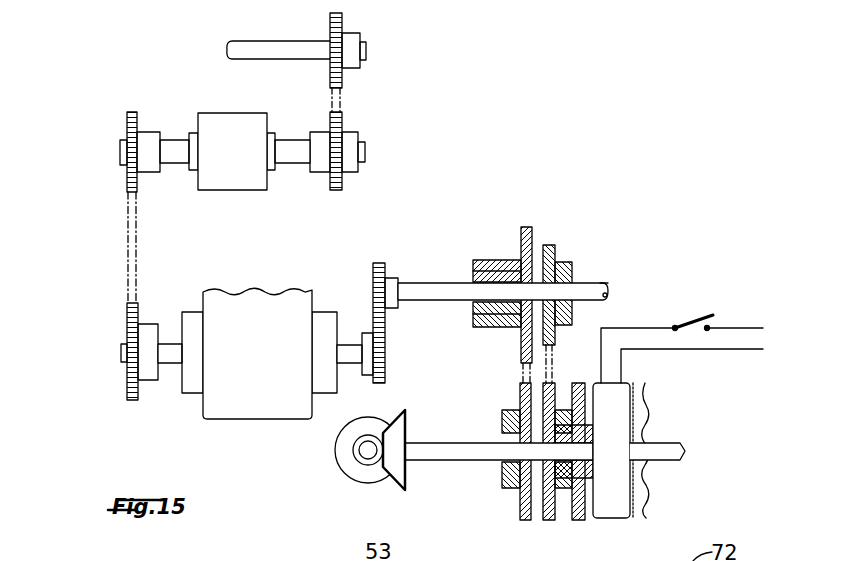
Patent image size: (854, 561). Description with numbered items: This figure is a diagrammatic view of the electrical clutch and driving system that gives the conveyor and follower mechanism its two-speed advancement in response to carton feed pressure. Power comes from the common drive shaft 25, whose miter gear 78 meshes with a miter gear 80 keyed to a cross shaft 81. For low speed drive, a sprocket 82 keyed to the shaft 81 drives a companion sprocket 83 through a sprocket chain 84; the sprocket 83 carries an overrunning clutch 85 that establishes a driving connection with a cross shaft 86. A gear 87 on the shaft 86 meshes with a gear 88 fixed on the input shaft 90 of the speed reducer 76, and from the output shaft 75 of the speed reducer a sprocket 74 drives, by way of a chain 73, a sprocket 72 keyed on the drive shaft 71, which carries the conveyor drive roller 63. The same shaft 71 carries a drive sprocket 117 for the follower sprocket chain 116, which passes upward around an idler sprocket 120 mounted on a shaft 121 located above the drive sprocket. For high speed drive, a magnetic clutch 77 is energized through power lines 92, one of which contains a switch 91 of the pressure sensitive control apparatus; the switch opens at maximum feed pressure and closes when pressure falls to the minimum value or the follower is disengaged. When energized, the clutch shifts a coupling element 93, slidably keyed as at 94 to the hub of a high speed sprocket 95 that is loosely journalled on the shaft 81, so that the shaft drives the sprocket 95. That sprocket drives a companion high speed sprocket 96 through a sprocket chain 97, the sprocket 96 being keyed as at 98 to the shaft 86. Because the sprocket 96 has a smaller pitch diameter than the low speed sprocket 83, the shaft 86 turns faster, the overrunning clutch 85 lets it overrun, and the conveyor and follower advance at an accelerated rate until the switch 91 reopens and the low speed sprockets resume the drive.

The common drive shaft 25 is at (368, 458).
The drive roller 63 is at (245, 170).
The drive shaft 71 is at (293, 140).
The sprocket 72 is at (128, 173).
The chain 73 is at (127, 250).
The sprocket 74 is at (127, 333).
The output shaft 75 is at (167, 350).
The speed reducer 76 is at (250, 305).
The magnetic clutch 77 is at (622, 490).
The miter gear 78 is at (335, 452).
The miter gear 80 is at (395, 437).
The cross shaft 81 is at (462, 452).
The sprocket 82 is at (502, 415).
The sprocket 83 is at (521, 240).
The sprocket chain 84 is at (520, 375).
The overrunning clutch 85 is at (474, 307).
The cross shaft 86 is at (427, 283).
The gear 87 is at (373, 280).
The gear 88 is at (385, 360).
The input shaft 90 is at (350, 350).
The switch 91 is at (697, 315).
The power lines 92 is at (747, 328).
The shiftable coupling element 93 is at (578, 508).
The key 94 is at (590, 432).
The high speed sprocket 95 is at (550, 508).
The high speed sprocket 96 is at (557, 262).
The sprocket chain 97 is at (553, 370).
The key 98 is at (588, 283).
The follower sprocket chain 116 is at (344, 99).
The drive sprocket 117 is at (366, 153).
The idler sprocket 120 is at (343, 22).
The shaft 121 is at (293, 45).